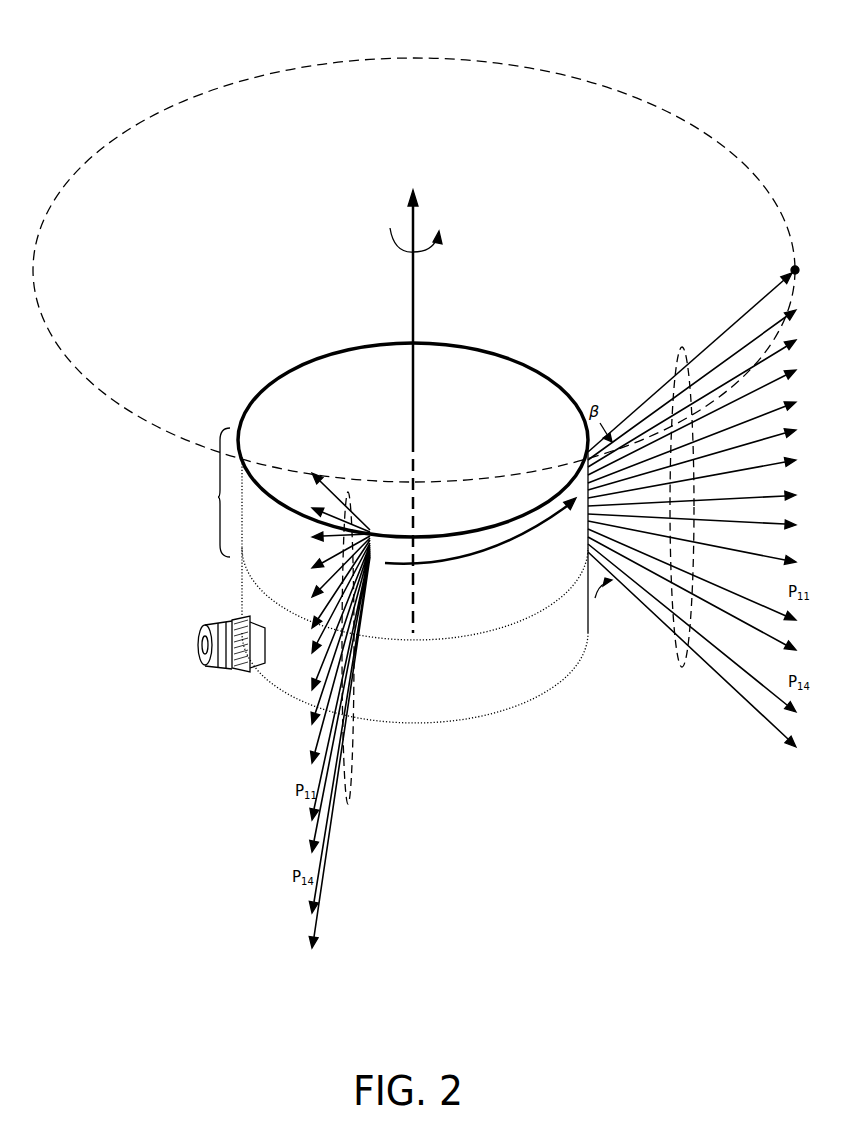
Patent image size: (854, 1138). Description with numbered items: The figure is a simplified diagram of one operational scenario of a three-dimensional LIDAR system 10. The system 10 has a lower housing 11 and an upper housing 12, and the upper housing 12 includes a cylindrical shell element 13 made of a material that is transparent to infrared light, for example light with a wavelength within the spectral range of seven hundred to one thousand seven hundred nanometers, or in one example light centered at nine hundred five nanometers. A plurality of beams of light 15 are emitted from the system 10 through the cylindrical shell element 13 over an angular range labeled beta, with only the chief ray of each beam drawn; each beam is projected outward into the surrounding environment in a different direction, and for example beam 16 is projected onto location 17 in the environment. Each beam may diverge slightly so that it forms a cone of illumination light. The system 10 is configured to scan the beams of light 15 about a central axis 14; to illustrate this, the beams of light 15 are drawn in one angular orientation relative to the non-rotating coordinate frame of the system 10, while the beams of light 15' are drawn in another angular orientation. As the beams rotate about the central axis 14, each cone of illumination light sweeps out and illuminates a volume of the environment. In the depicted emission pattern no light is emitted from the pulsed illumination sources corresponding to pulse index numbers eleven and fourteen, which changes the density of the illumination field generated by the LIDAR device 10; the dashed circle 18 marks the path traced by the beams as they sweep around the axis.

The 3-D LIDAR system 10 is at (113, 60).
The lower housing 11 is at (535, 660).
The upper housing 12 is at (228, 497).
The cylindrical shell element 13 is at (291, 557).
The central axis 14 is at (413, 292).
The beams of light 15 is at (679, 482).
The beams of light 15' is at (374, 662).
The beam 16 is at (758, 306).
The location 17 is at (797, 267).
The scan circle 18 is at (735, 156).